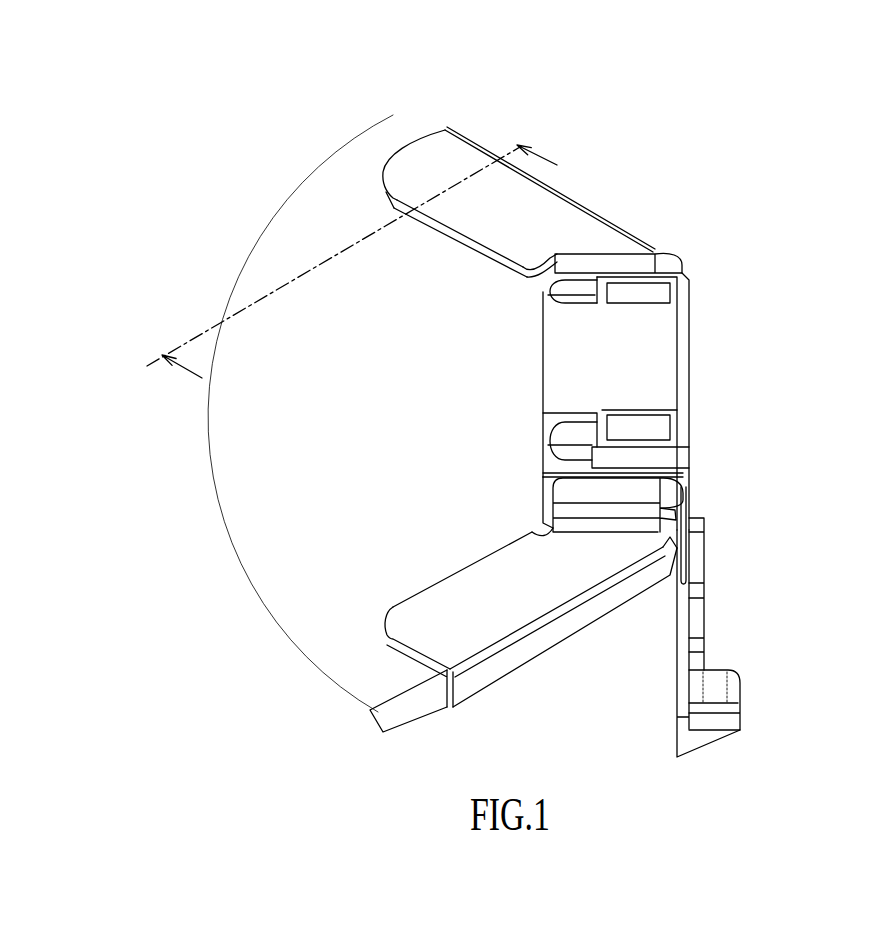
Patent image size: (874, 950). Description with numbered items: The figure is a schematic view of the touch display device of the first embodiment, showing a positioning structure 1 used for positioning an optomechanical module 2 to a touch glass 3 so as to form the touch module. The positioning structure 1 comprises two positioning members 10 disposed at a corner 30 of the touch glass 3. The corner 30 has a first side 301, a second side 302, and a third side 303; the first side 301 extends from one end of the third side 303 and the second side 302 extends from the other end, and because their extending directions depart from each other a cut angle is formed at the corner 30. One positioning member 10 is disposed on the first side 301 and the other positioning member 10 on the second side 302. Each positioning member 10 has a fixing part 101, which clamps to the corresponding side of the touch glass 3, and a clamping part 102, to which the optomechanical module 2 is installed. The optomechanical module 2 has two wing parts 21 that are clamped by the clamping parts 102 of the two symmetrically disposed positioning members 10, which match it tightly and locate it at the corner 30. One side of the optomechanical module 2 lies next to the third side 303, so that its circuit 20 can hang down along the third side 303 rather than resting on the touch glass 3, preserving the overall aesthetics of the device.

The positioning structure 1 is at (658, 203).
The optomechanical module 2 is at (496, 379).
The touch glass 3 is at (315, 413).
The positioning member 10 is at (410, 413).
The circuit 20 is at (705, 603).
The wing part 21 is at (543, 503).
The corner 30 is at (303, 258).
The fixing part 101 is at (597, 233).
The clamping part 102 is at (652, 255).
The first side 301 is at (412, 127).
The second side 302 is at (413, 704).
The third side 303 is at (674, 545).